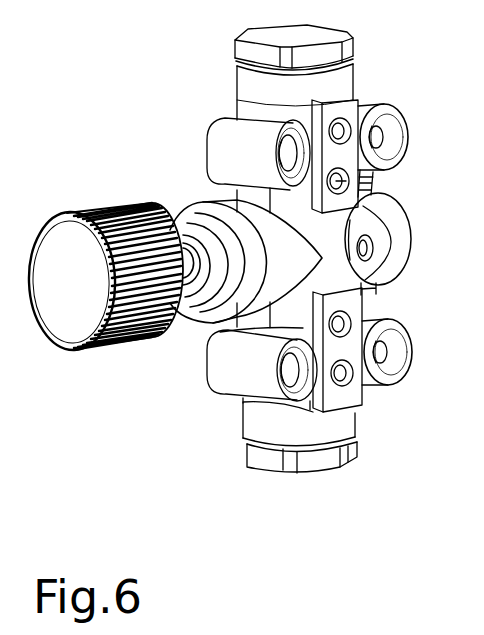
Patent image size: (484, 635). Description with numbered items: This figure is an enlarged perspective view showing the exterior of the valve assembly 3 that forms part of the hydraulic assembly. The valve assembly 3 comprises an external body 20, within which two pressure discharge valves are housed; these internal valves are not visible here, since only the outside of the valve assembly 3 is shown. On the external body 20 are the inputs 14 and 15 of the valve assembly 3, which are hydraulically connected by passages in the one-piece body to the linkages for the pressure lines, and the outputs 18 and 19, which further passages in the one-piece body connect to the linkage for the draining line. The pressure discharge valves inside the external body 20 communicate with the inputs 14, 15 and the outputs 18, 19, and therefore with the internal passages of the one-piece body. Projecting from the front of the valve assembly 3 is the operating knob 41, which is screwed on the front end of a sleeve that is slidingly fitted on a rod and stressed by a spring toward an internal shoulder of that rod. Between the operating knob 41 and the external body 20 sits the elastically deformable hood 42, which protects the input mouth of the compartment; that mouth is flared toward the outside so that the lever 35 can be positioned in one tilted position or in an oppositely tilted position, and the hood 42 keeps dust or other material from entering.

The valve assembly 3 is at (379, 70).
The external body 20 is at (256, 88).
The input 14 is at (360, 102).
The output 18 is at (375, 187).
The output 19 is at (344, 322).
The input 15 is at (343, 376).
The elastically deformable hood 42 is at (205, 214).
The operating knob 41 is at (115, 210).
The lever 35 is at (140, 346).